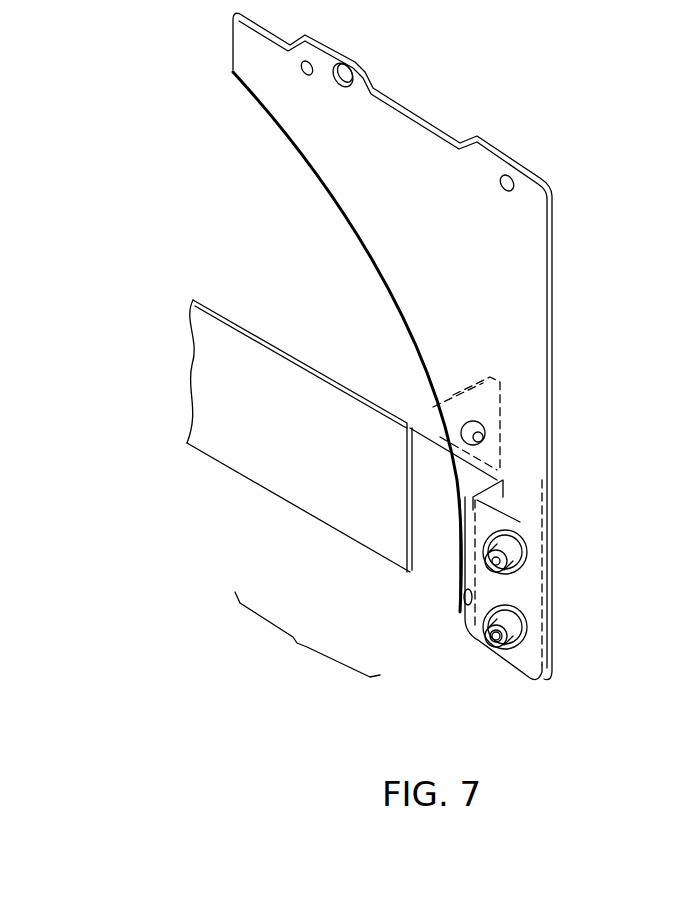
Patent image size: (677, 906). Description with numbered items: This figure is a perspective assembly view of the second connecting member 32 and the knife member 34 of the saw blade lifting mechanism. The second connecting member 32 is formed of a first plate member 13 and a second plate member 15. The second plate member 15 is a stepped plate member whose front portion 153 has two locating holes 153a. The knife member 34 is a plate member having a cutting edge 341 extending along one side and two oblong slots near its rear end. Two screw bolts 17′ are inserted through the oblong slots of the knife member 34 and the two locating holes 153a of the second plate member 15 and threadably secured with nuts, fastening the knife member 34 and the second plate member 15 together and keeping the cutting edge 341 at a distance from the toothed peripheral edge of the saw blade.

The knife member 34 is at (550, 313).
The cutting edge 341 is at (320, 183).
The first plate member 13 is at (347, 520).
The second plate member 15 is at (437, 577).
The front portion 153 is at (517, 517).
The locating holes 153a is at (523, 620).
The screw bolts 17′ is at (478, 645).
The second connecting member 32 is at (307, 640).